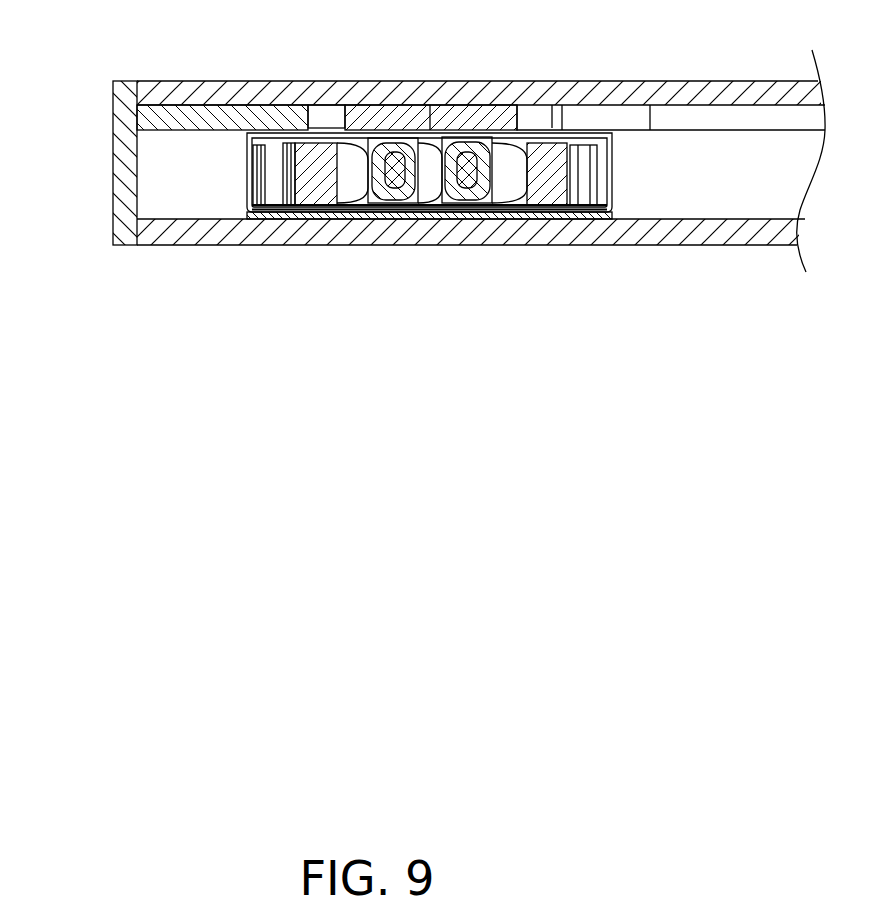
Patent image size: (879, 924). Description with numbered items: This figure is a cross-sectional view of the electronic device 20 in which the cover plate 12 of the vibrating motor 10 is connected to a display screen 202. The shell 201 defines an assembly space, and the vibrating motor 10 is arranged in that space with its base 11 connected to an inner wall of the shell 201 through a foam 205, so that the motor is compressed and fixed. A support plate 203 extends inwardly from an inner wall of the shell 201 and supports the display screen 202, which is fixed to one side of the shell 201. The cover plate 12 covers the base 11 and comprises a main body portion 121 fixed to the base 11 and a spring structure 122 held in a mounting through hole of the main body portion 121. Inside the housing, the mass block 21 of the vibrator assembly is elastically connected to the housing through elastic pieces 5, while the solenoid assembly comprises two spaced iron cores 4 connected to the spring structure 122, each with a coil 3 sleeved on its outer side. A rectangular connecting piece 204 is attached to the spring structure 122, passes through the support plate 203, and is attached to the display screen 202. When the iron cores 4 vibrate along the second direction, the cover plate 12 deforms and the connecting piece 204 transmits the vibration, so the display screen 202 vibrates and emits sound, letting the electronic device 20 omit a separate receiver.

The electronic device 20 is at (153, 72).
The support plate 203 is at (214, 95).
The main body portion 121 is at (292, 127).
The connecting piece 204 is at (418, 138).
The spring structure 122 is at (490, 138).
The cover plate 12 is at (560, 126).
The display screen 202 is at (633, 95).
The vibrating motor 10 is at (247, 172).
The shell 201 is at (125, 214).
The elastic pieces 5 is at (258, 207).
The mass block 21 is at (308, 198).
The iron cores 4 is at (394, 178).
The coils 3 is at (465, 197).
The base 11 is at (522, 215).
The foam 205 is at (570, 215).